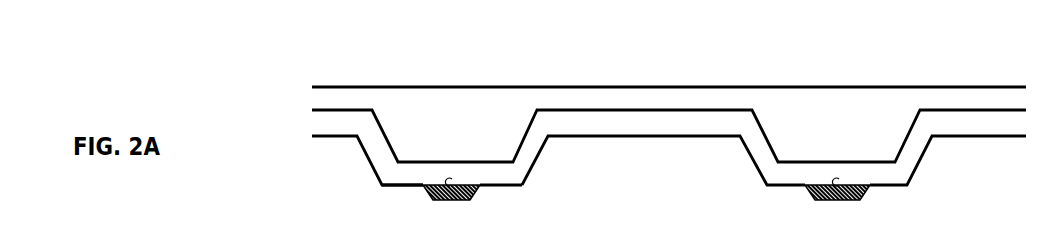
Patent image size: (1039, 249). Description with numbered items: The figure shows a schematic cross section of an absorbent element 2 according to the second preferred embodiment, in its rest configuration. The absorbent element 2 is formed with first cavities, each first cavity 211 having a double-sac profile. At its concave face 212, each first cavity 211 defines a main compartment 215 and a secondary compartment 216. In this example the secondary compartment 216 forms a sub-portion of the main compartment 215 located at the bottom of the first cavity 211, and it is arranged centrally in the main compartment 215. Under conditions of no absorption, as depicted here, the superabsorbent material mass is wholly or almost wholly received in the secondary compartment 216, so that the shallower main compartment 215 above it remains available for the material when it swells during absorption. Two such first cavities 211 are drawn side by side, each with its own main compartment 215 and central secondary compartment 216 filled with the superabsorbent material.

The absorbent element 2 is at (867, 53).
The first cavity 211 is at (358, 163).
The concave face 212 is at (407, 182).
The main compartment 215 is at (500, 182).
The secondary compartment 216 is at (468, 190).